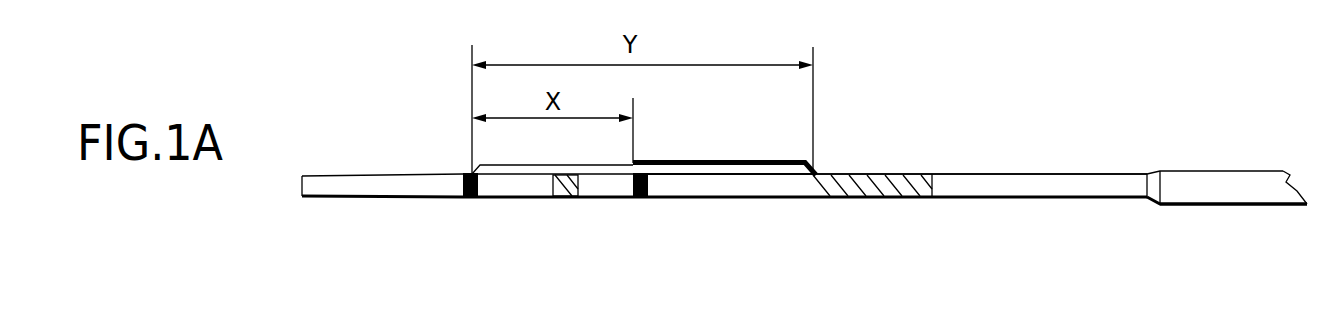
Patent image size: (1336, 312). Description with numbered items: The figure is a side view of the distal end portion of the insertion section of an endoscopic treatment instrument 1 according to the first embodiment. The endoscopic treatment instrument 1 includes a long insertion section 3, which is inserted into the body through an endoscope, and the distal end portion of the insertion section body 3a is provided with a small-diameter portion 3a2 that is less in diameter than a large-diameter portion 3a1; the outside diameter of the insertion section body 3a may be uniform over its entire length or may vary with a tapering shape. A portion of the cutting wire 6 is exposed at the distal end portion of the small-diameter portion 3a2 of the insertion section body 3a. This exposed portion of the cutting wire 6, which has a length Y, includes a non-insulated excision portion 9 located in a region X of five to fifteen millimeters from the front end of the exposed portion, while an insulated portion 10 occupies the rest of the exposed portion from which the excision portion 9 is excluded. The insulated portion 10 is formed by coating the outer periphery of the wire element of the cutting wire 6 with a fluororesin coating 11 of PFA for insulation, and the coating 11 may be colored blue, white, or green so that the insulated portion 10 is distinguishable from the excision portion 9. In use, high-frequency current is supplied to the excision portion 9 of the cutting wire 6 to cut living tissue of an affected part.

The endoscopic treatment instrument 1 is at (804, 167).
The insertion section 3 is at (1050, 214).
The insertion section body 3a is at (1233, 172).
The large-diameter portion 3a1 is at (1202, 196).
The small-diameter portion 3a2 is at (968, 183).
The cutting wire 6 is at (608, 165).
The excision portion 9 is at (520, 165).
The insulated portion 10 is at (750, 168).
The coating 11 is at (702, 160).